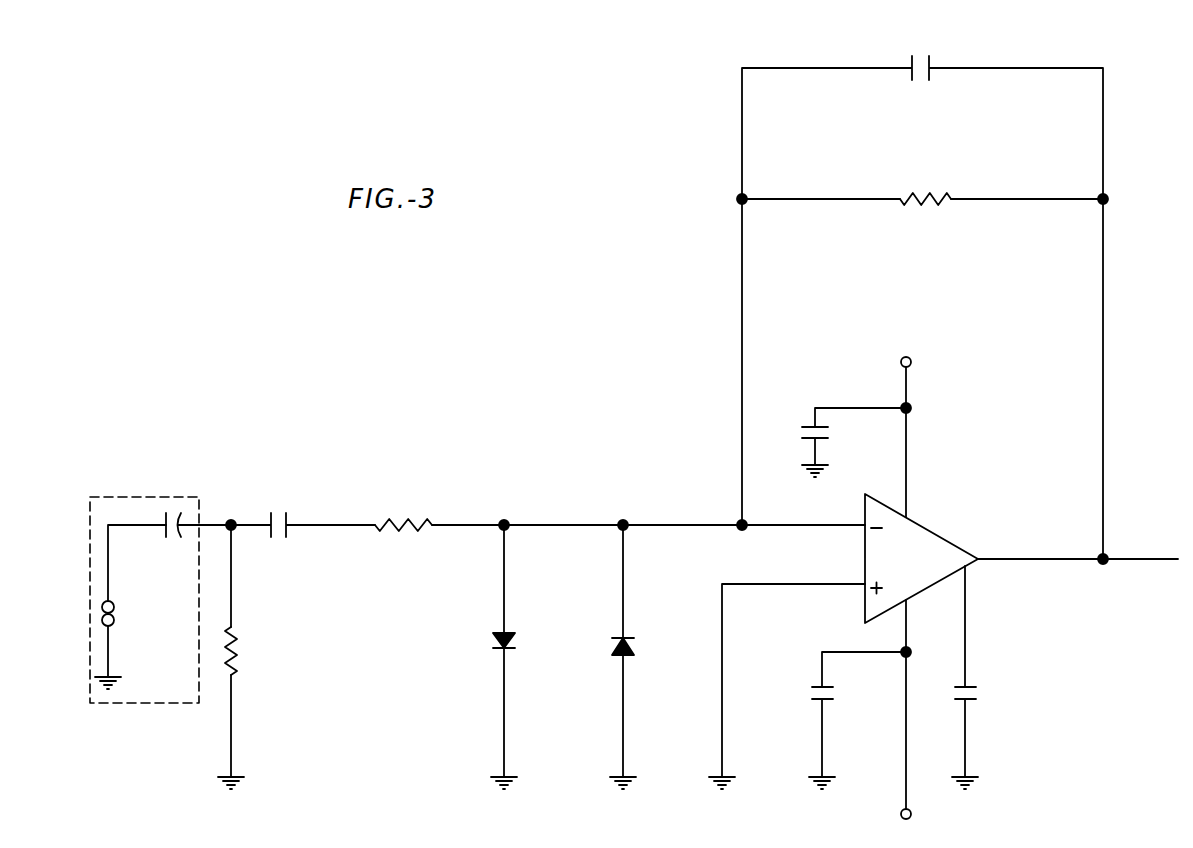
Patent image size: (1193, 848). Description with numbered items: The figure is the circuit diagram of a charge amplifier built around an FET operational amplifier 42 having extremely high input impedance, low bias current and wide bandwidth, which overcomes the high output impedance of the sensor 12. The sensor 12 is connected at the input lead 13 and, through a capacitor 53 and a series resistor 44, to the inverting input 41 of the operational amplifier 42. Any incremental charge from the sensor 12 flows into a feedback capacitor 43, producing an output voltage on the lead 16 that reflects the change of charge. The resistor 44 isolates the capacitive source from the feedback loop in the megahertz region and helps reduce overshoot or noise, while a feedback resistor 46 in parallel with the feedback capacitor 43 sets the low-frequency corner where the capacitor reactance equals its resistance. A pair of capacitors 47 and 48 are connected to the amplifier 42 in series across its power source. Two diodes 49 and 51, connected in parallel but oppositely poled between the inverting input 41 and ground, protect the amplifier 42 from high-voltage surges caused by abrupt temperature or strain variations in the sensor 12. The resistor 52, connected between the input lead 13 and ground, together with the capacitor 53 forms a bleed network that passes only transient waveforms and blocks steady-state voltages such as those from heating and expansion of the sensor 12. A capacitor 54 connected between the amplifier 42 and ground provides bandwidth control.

The sensor 12 is at (88, 648).
The input lead 13 is at (212, 522).
The lead 16 is at (1128, 557).
The inverting input 41 is at (796, 523).
The operational amplifier 42 is at (943, 531).
The feedback capacitor 43 is at (932, 64).
The resistor 44 is at (396, 520).
The feedback resistor 46 is at (924, 203).
The capacitor 47 is at (813, 683).
The capacitor 48 is at (810, 424).
The diode 49 is at (499, 634).
The diode 51 is at (616, 637).
The resistor 52 is at (238, 648).
The capacitor 53 is at (289, 521).
The capacitor 54 is at (972, 684).